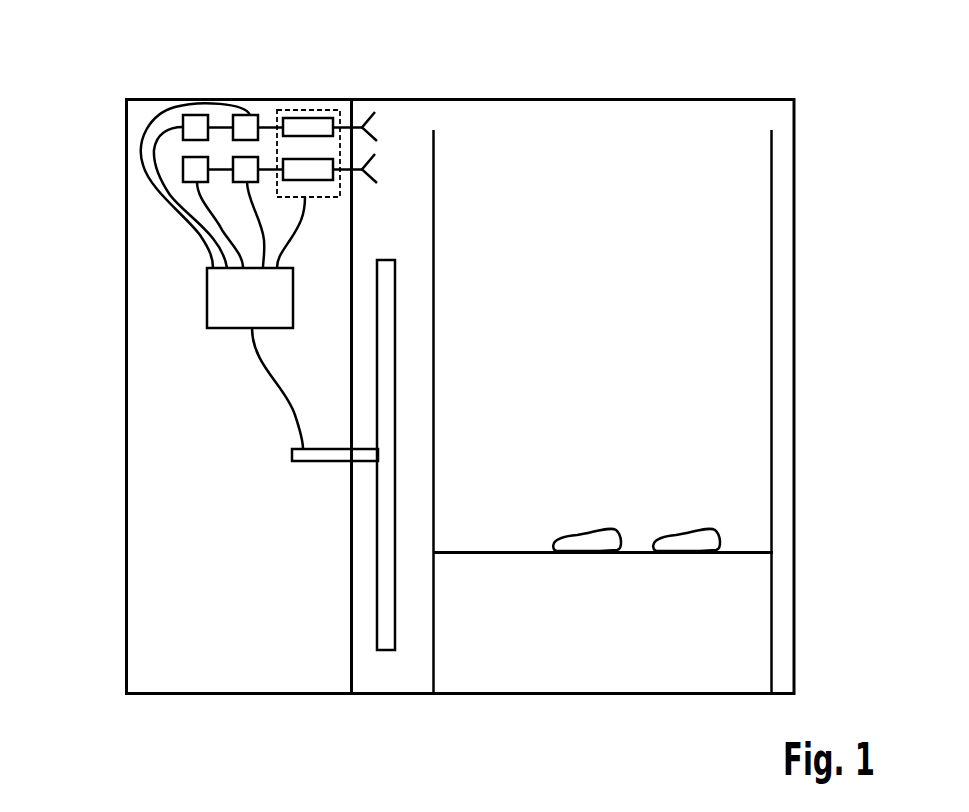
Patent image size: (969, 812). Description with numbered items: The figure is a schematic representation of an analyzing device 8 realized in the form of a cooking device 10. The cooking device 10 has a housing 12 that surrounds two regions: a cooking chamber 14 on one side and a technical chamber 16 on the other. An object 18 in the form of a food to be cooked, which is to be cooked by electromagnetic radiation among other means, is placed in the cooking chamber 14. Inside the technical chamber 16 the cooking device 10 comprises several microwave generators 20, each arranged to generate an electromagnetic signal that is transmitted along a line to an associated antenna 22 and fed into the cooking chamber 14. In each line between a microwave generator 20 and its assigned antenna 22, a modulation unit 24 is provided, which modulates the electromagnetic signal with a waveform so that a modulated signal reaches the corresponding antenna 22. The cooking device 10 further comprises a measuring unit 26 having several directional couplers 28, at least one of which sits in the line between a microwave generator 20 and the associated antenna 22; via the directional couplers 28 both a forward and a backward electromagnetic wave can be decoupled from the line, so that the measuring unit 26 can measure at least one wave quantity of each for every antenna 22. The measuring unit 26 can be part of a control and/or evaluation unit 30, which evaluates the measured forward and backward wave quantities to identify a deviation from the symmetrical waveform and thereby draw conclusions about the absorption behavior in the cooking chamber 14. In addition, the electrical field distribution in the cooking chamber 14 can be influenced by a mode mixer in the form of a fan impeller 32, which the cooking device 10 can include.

The analyzing device 8 is at (562, 86).
The cooking device 10 is at (103, 88).
The housing 12 is at (143, 695).
The cooking chamber 14 is at (587, 340).
The technical chamber 16 is at (222, 554).
The object 18 is at (588, 541).
The microwave generator 20 is at (197, 114).
The antenna 22 is at (377, 158).
The modulation unit 24 is at (248, 114).
The measuring unit 26 is at (293, 109).
The directional coupler 28 is at (320, 157).
The control and/or evaluation unit 30 is at (207, 307).
The fan impeller 32 is at (383, 652).